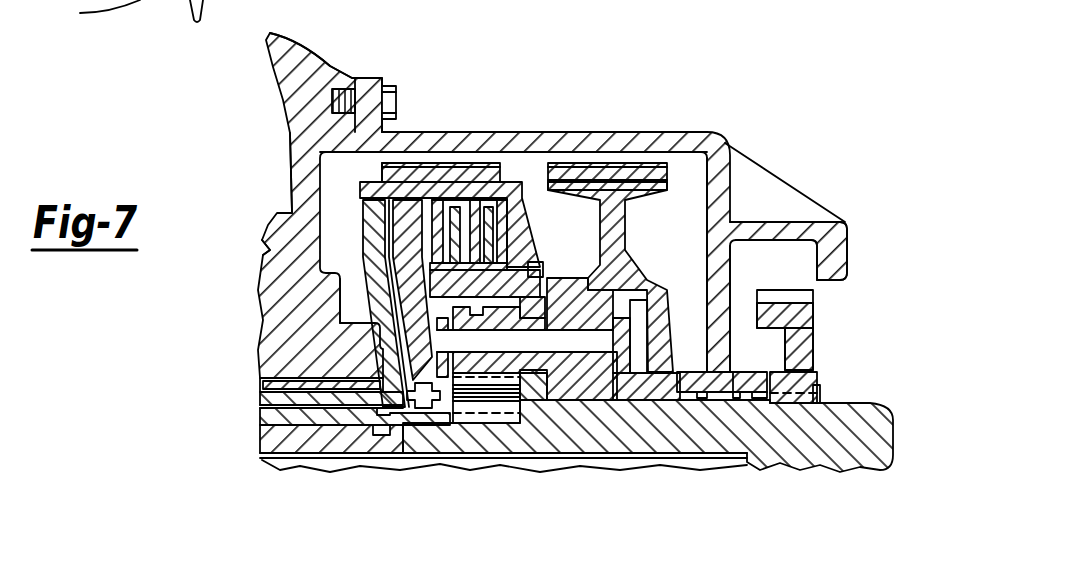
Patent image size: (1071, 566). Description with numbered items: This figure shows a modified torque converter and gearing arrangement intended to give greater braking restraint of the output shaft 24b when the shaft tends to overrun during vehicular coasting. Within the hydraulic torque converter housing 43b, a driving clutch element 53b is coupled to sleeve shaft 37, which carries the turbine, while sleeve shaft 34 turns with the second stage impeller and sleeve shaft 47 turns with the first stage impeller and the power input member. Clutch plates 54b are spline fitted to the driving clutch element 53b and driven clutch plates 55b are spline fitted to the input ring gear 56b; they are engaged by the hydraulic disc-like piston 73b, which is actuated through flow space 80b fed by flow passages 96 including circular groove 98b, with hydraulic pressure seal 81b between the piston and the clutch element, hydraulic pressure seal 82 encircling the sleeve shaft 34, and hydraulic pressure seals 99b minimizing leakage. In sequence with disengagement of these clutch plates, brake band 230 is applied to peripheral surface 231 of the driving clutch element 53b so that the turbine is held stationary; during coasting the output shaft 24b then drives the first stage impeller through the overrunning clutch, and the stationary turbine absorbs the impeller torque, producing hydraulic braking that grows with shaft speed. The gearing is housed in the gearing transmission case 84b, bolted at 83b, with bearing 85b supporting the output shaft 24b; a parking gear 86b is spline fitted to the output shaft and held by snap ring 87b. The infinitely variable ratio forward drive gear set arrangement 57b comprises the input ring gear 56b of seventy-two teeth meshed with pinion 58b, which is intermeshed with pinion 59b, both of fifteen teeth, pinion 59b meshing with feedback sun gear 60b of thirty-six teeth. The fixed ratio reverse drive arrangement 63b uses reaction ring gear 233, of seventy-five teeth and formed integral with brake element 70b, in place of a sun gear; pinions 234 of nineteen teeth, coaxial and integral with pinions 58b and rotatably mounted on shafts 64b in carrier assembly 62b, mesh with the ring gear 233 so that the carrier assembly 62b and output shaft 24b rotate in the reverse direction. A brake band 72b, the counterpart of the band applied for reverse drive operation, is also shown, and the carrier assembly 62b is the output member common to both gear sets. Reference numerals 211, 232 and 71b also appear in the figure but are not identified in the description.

The lever 211 is at (93, 8).
The hydraulic torque converter housing 43b is at (323, 65).
The gearing transmission case 84b is at (372, 78).
The bolted connection 83b is at (398, 97).
The clutch plates 54b is at (468, 205).
The driven clutch plates 55b is at (482, 200).
The input ring gear 56b is at (538, 173).
The rotor flange 71b is at (567, 173).
The brake band 72b is at (593, 175).
The brake element 70b is at (633, 267).
The brake band 230 is at (324, 132).
The peripheral surface 231 is at (380, 168).
The driving clutch element 53b is at (380, 197).
The housing notch 232 is at (278, 205).
The flow space 80b is at (402, 255).
The hydraulic pressure seal 81b is at (370, 230).
The hydraulic disc-like piston 73b is at (338, 300).
The infinitely variable ratio forward drive gear set arrangement 57b is at (437, 325).
The sleeve shaft 47 is at (260, 380).
The sleeve shaft 37 is at (260, 397).
The sleeve shaft 34 is at (262, 430).
The flow passages 96 is at (363, 457).
The hydraulic pressure seal 82 is at (428, 412).
The feedback sun gear 60b is at (485, 400).
The pinion 59b is at (510, 380).
The carrier assembly 62b is at (553, 380).
The hydraulic pressure seals 99b is at (702, 400).
The circular groove 98b is at (720, 403).
The output shaft 24b is at (870, 457).
The snap ring 87b is at (820, 390).
The bearing 85b is at (753, 367).
The parking gear 86b is at (813, 320).
The fixed ratio gear set reverse drive arrangement 63b is at (670, 283).
The pinions 234 is at (640, 303).
The shafts 64b is at (580, 340).
The reaction ring gear 233 is at (553, 283).
The pinion 58b is at (533, 262).